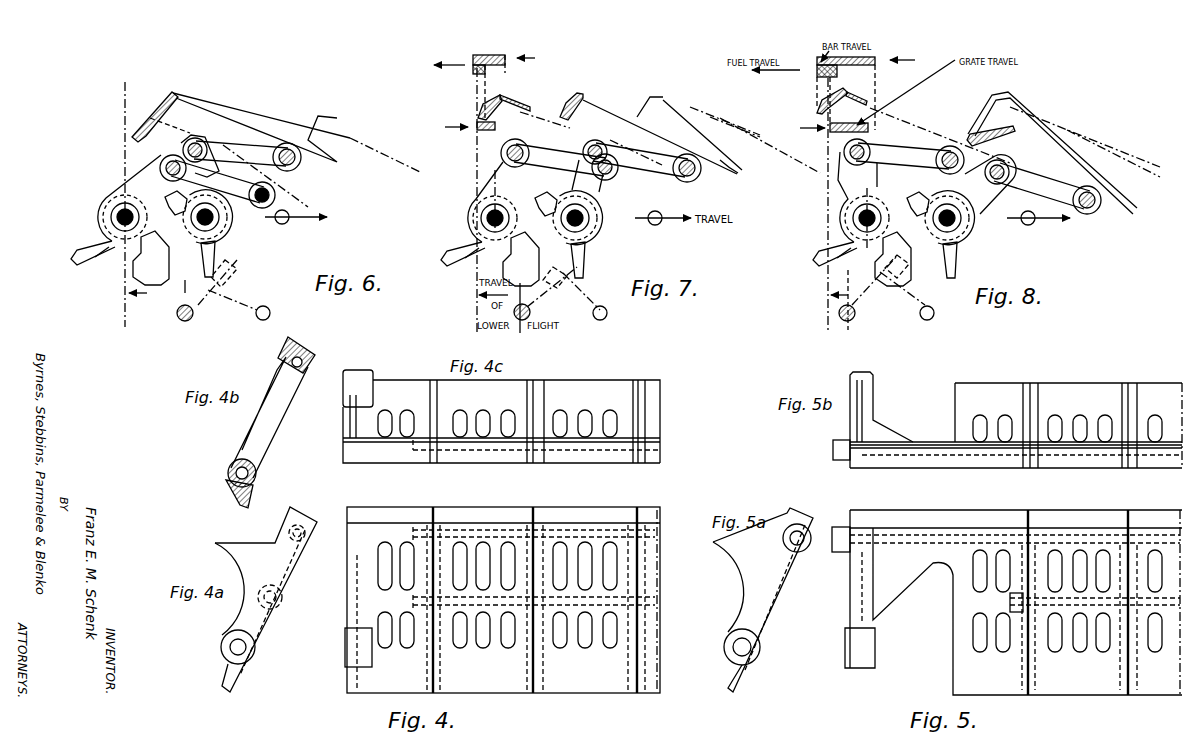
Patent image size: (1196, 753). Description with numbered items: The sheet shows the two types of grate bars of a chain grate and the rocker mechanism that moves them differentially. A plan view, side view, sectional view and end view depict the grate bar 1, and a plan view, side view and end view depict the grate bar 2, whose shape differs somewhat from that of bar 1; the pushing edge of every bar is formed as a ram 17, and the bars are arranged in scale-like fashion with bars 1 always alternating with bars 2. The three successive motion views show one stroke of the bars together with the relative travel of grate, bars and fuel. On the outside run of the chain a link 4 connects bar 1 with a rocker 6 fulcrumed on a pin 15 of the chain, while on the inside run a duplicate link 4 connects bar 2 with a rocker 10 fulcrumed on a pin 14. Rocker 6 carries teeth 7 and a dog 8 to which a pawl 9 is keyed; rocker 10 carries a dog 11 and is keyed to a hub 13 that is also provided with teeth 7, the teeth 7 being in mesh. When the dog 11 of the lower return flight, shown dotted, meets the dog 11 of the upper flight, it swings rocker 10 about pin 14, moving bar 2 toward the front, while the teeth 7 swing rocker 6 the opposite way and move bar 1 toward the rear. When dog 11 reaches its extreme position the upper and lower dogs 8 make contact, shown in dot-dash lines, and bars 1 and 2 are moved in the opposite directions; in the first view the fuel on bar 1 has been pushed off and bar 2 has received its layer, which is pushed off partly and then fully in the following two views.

In FIG. 6, the grate bar 1 is at (280, 150).
In FIG. 7, the grate bar 1 is at (630, 127).
In FIG. 8, the grate bar 1 is at (1001, 146).
In FIG. 5B, the grate bar 1 is at (1007, 420).
In FIG. 5A, the grate bar 1 is at (763, 600).
In FIG. 5, the grate bar 1 is at (1007, 602).
In FIG. 6, the grate bar 2 is at (162, 110).
In FIG. 7, the grate bar 2 is at (581, 100).
In FIG. 8, the grate bar 2 is at (924, 117).
In FIG. 4B, the grate bar 2 is at (270, 422).
In FIG. 4C, the grate bar 2 is at (501, 416).
In FIG. 4A, the grate bar 2 is at (266, 599).
In FIG. 4, the grate bar 2 is at (502, 600).
In FIG. 6, the link 4 is at (230, 174).
In FIG. 7, the link 4 is at (601, 160).
In FIG. 8, the link 4 is at (972, 176).
In FIG. 6, the rocker 6 is at (152, 210).
In FIG. 7, the rocker 6 is at (522, 224).
In FIG. 8, the rocker 6 is at (894, 209).
In FIG. 6, the teeth 7 is at (158, 242).
In FIG. 8, the teeth 7 is at (914, 193).
In FIG. 6, the dog 8 is at (175, 283).
In FIG. 7, the dog 8 is at (536, 284).
In FIG. 8, the dog 8 is at (885, 284).
In FIG. 6, the pawl 9 is at (151, 258).
In FIG. 8, the pawl 9 is at (893, 259).
In FIG. 6, the rocker 10 is at (200, 156).
In FIG. 7, the rocker 10 is at (589, 166).
In FIG. 8, the rocker 10 is at (990, 184).
In FIG. 6, the dog 11 is at (227, 277).
In FIG. 8, the dog 11 is at (904, 278).
In FIG. 6, the hub 13 is at (239, 251).
In FIG. 8, the hub 13 is at (989, 244).
In FIG. 6, the pin 14 is at (218, 265).
In FIG. 7, the pin 14 is at (574, 254).
In FIG. 8, the pin 14 is at (906, 264).
In FIG. 6, the pin 15 is at (105, 217).
In FIG. 7, the pin 15 is at (470, 218).
In FIG. 8, the pin 15 is at (841, 220).
In FIG. 6, the ram 17 is at (147, 97).
In FIG. 7, the ram 17 is at (473, 107).
In FIG. 4B, the ram 17 is at (305, 345).
In FIG. 4C, the ram 17 is at (487, 457).
In FIG. 4A, the ram 17 is at (300, 515).
In FIG. 4, the ram 17 is at (488, 518).
In FIG. 5B, the ram 17 is at (1065, 462).
In FIG. 5A, the ram 17 is at (798, 516).
In FIG. 5, the ram 17 is at (1065, 520).